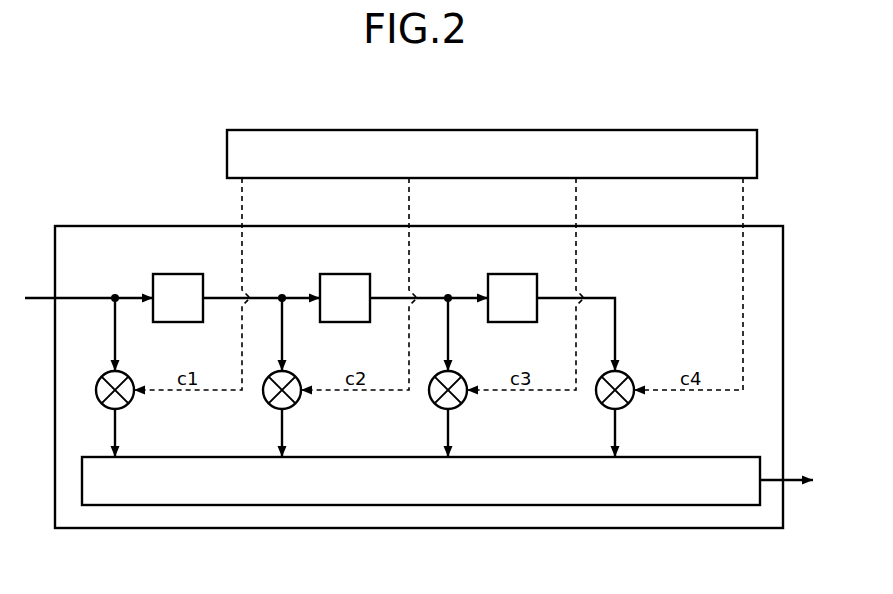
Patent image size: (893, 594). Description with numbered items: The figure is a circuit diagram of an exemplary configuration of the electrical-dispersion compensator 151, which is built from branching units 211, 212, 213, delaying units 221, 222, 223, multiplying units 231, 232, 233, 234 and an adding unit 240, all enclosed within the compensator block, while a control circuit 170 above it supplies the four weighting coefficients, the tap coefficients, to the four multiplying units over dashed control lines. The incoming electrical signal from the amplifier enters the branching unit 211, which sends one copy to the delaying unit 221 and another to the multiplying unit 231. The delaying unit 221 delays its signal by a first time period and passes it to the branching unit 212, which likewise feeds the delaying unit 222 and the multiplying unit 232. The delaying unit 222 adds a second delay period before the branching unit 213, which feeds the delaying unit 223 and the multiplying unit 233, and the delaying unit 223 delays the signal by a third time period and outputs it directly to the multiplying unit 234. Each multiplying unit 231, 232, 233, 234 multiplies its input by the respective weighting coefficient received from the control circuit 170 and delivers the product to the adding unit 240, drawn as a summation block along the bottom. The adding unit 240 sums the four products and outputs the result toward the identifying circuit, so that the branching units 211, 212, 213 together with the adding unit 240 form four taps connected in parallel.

The electrical-dispersion compensator 151 is at (134, 222).
The control circuit 170 is at (592, 124).
The branching unit 211 is at (115, 294).
The branching unit 212 is at (282, 294).
The branching unit 213 is at (448, 294).
The delaying unit 221 is at (178, 270).
The delaying unit 222 is at (343, 270).
The delaying unit 223 is at (508, 270).
The multiplying unit 231 is at (128, 374).
The multiplying unit 232 is at (296, 374).
The multiplying unit 233 is at (463, 374).
The multiplying unit 234 is at (628, 374).
The adding unit 240 is at (670, 453).